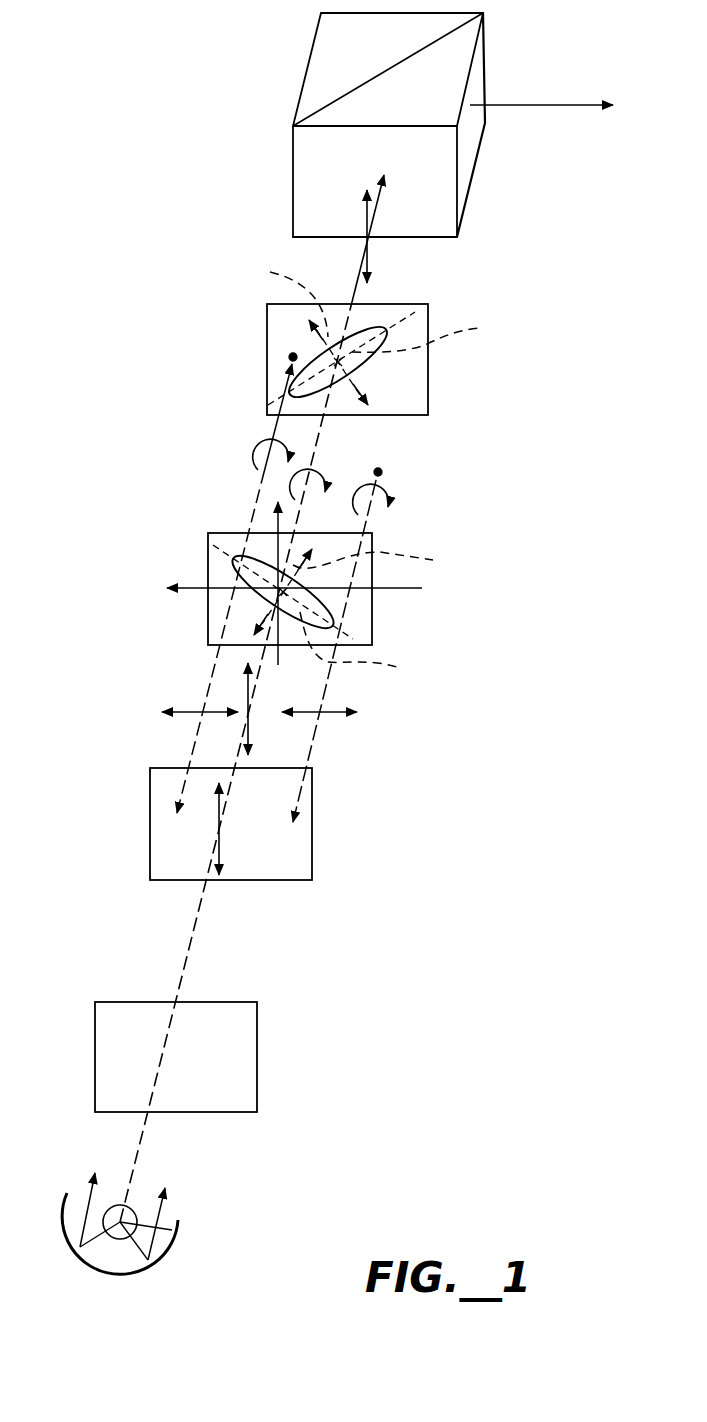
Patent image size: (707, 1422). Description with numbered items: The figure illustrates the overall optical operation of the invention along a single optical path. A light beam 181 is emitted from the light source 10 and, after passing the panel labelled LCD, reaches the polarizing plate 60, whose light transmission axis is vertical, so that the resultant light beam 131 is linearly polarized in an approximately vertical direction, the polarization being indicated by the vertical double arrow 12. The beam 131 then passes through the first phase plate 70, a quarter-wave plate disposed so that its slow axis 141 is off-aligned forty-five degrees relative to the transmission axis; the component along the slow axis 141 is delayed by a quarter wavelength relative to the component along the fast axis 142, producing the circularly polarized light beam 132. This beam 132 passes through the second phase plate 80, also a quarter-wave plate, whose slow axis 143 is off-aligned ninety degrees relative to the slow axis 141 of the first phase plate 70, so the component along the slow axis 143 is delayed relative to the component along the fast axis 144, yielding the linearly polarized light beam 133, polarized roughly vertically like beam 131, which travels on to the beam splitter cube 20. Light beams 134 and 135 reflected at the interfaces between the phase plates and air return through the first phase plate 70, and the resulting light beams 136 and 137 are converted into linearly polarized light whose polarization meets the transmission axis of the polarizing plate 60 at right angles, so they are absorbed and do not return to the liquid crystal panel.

The light source 10 is at (173, 1233).
The polarization direction of light 12 is at (217, 835).
The polarizing beam splitter cube 20 is at (468, 150).
The polarizing plate 60 is at (307, 855).
The first phase plate 70 is at (358, 630).
The second phase plate 80 is at (420, 390).
The linearly polarized light beam 131 is at (252, 727).
The circularly polarized light beam 132 is at (315, 470).
The linearly polarized light beam 133 is at (368, 248).
The reflected light beam 134 is at (382, 472).
The reflected light beam 135 is at (277, 423).
The resulting light beam 136 is at (327, 712).
The resulting light beam 137 is at (198, 712).
The slow axis of the first phase plate 141 is at (382, 651).
The fast axis of the first phase plate 142 is at (395, 563).
The slow axis of the second phase plate 143 is at (446, 335).
The fast axis of the second phase plate 144 is at (270, 292).
The light beam 181 is at (197, 922).
The liquid crystal display panel LCD is at (258, 1023).